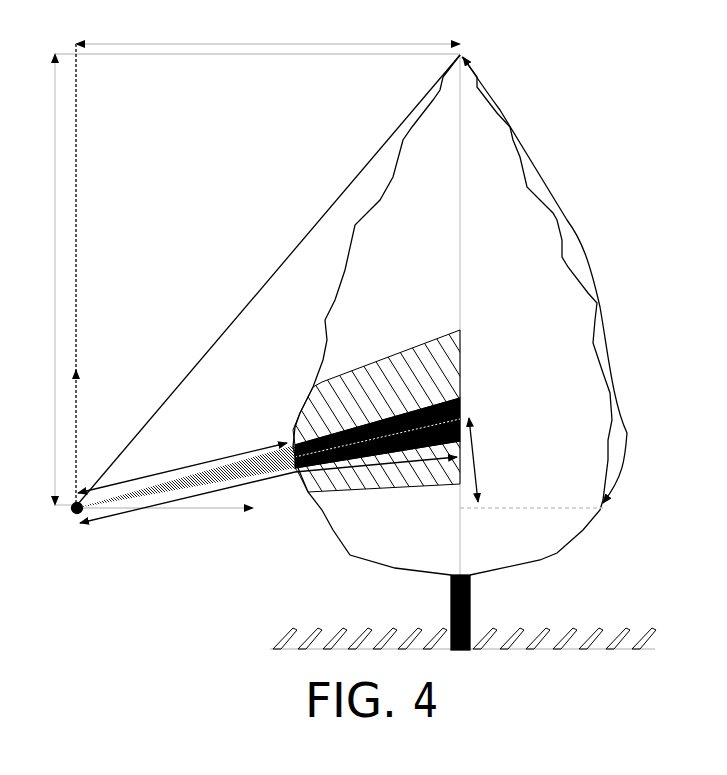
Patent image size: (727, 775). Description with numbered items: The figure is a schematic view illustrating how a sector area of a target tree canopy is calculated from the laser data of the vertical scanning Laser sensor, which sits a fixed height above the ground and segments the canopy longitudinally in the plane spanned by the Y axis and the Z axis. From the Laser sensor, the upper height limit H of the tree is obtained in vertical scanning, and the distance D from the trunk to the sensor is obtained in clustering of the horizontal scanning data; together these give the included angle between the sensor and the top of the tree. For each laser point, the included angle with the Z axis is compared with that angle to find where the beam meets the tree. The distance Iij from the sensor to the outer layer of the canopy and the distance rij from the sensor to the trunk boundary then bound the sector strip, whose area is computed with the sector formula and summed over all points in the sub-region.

The distance from trunk to LiDAR D is at (268, 28).
The upper height limit of tree H is at (36, 279).
The Y axis Y is at (87, 427).
The Z axis Z is at (165, 522).
The vertical scanning LiDAR Laser sensor is at (64, 545).
The distance from LiDAR to outer layer of target Iij is at (186, 465).
The distance from LiDAR to trunk boundary rij is at (268, 490).